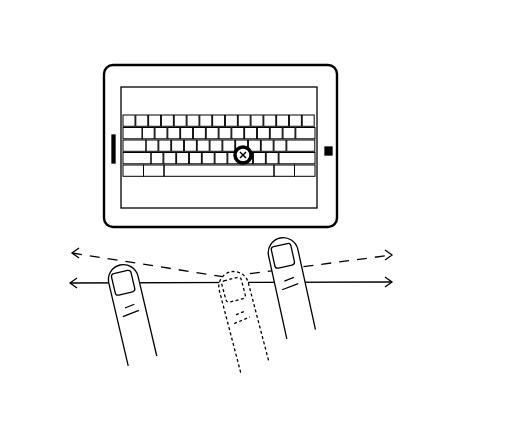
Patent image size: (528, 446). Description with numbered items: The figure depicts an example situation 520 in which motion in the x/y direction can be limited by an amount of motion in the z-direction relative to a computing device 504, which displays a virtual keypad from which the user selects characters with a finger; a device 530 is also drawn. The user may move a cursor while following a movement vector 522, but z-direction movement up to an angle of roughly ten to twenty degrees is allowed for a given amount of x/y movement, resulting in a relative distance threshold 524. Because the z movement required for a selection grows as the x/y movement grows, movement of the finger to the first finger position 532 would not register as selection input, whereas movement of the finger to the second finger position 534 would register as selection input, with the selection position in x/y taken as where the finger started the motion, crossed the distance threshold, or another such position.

The example situation 520 is at (237, 221).
The computing device 530 is at (398, 107).
The computing device 504 is at (107, 123).
The movement vector 522 is at (212, 283).
The relative distance threshold 524 is at (212, 259).
The first finger position 532 is at (98, 323).
The second finger position 534 is at (323, 302).